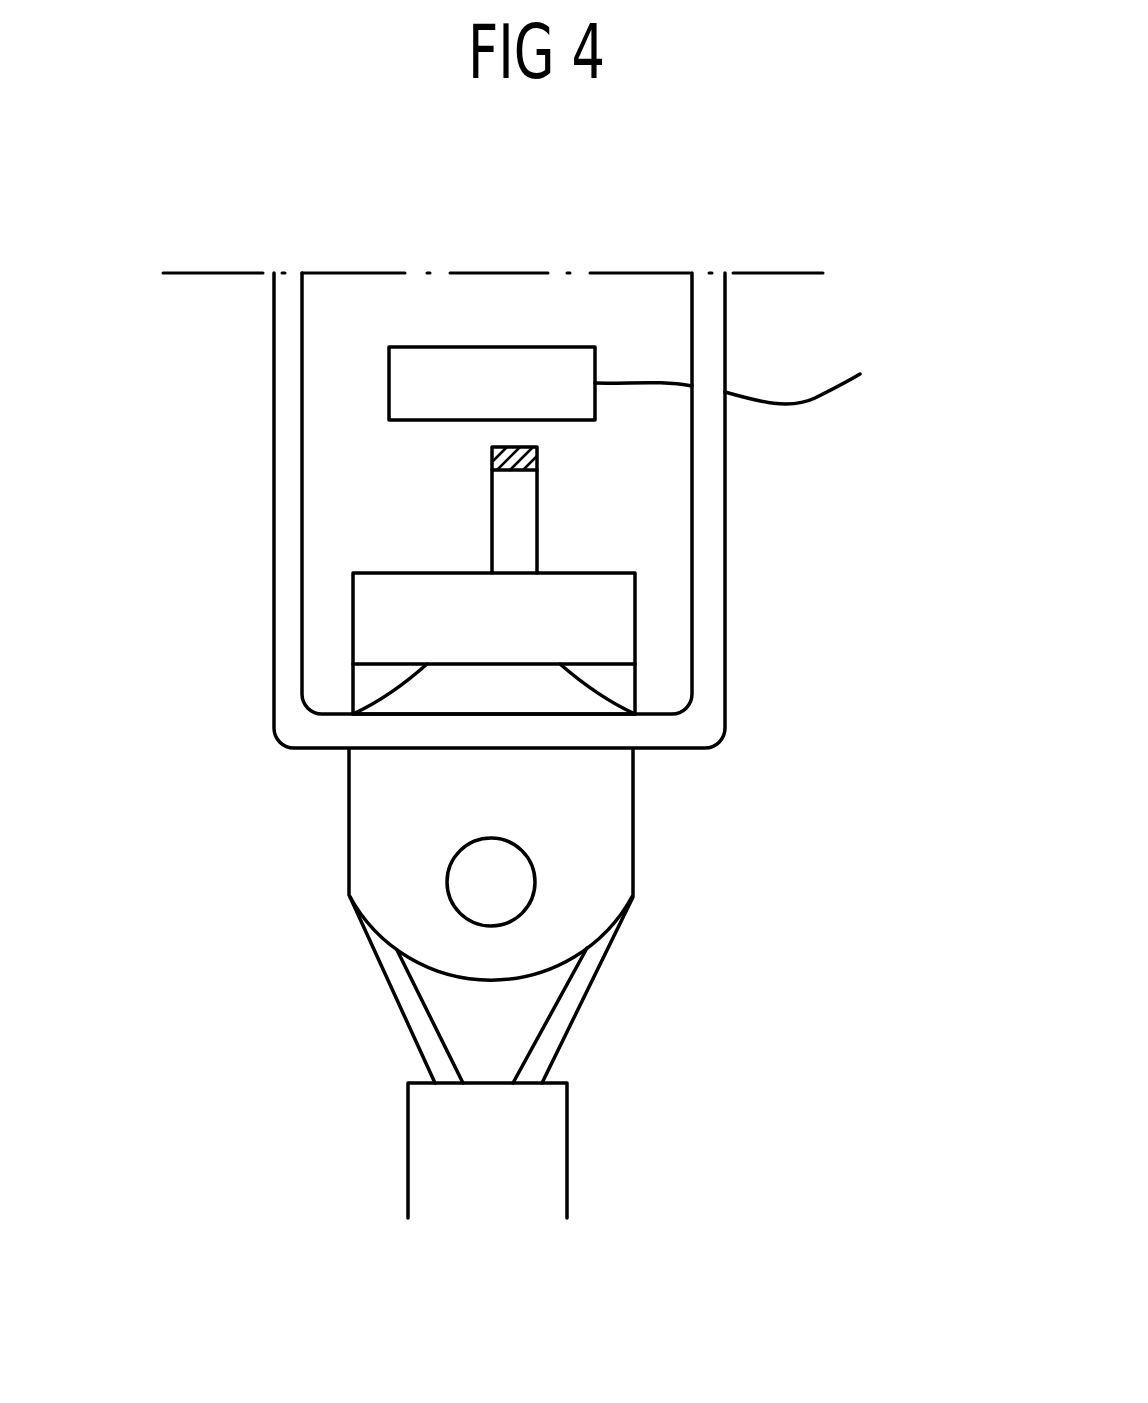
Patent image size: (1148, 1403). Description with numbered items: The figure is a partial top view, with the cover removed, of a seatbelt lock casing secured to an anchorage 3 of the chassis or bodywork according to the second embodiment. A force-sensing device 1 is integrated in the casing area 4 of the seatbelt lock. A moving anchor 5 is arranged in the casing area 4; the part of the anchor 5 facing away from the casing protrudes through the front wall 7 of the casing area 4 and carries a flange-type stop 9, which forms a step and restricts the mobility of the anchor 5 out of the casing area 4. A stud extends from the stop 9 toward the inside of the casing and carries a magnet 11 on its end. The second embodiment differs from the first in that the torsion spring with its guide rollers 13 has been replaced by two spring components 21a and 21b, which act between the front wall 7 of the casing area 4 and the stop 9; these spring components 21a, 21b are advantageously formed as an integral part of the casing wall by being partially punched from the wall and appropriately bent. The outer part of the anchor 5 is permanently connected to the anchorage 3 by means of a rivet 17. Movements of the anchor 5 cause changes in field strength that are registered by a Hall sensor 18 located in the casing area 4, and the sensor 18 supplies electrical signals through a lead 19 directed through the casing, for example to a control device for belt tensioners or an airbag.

The force-sensing device 1 is at (806, 325).
The anchorage 3 is at (532, 1148).
The casing area 4 is at (500, 522).
The moving anchor 5 is at (407, 621).
The front wall 7 is at (370, 733).
The flange-type stop 9 is at (612, 618).
The magnet 11 is at (492, 458).
The guide roller 13 is at (598, 823).
The rivet 17 is at (512, 890).
The Hall sensor 18 is at (438, 365).
The cable 19 is at (838, 396).
The spring component 21a is at (380, 693).
The spring component 21b is at (615, 698).